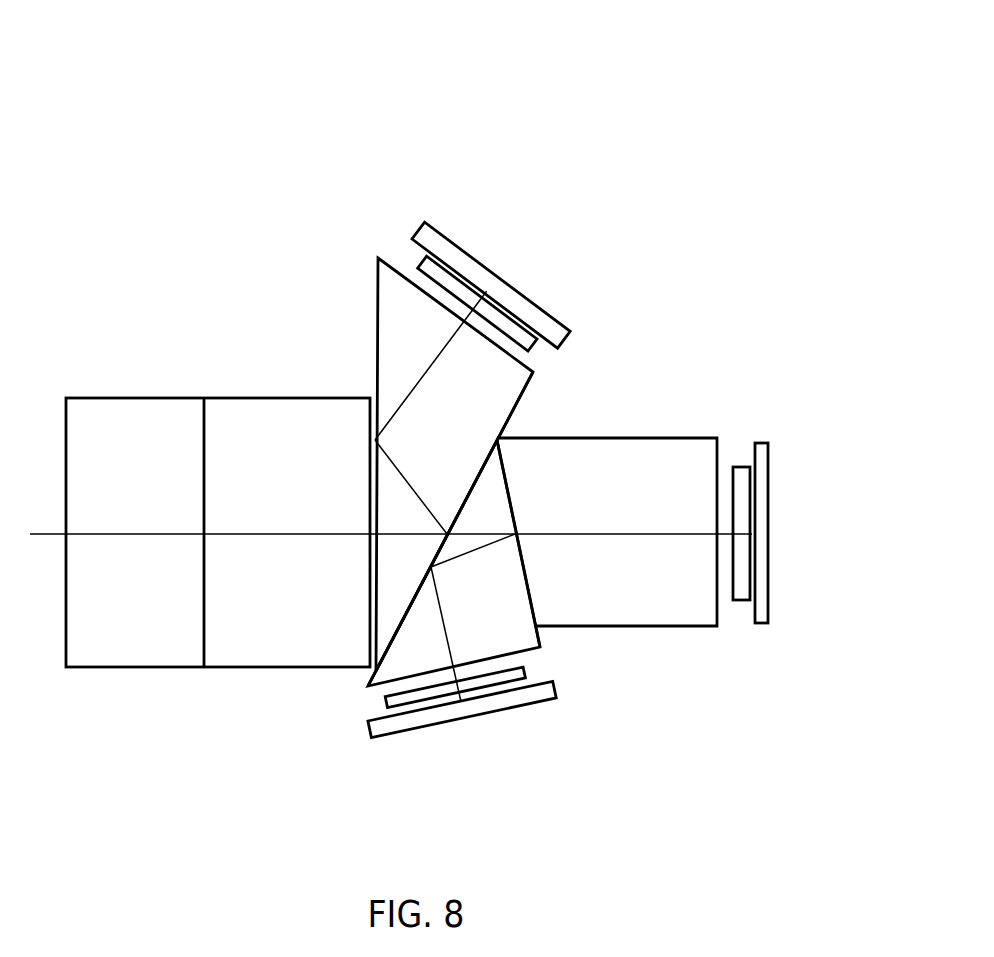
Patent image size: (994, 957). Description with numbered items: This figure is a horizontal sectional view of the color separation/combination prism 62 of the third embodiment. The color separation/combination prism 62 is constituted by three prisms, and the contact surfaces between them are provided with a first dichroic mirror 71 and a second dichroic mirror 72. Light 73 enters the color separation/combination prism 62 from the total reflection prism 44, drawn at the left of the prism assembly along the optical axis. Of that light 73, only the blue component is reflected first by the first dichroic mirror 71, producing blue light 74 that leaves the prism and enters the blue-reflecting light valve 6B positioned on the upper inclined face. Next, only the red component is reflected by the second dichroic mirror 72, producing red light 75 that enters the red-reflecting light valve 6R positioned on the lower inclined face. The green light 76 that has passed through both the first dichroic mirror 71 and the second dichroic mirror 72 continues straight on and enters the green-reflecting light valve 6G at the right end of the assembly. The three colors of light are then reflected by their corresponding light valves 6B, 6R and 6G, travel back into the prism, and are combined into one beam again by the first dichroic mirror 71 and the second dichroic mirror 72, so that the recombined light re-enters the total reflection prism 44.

The color separation/combination prism 62 is at (598, 132).
The total reflection prism 44 is at (240, 655).
The light 73 is at (283, 533).
The blue light 74 is at (440, 350).
The red light 75 is at (445, 630).
The first dichroic mirror 71 is at (482, 460).
The second dichroic mirror 72 is at (510, 490).
The green light 76 is at (687, 534).
The green-reflecting light valve 6G is at (763, 485).
The blue-reflecting light valve 6B is at (442, 243).
The red-reflecting light valve 6R is at (508, 703).